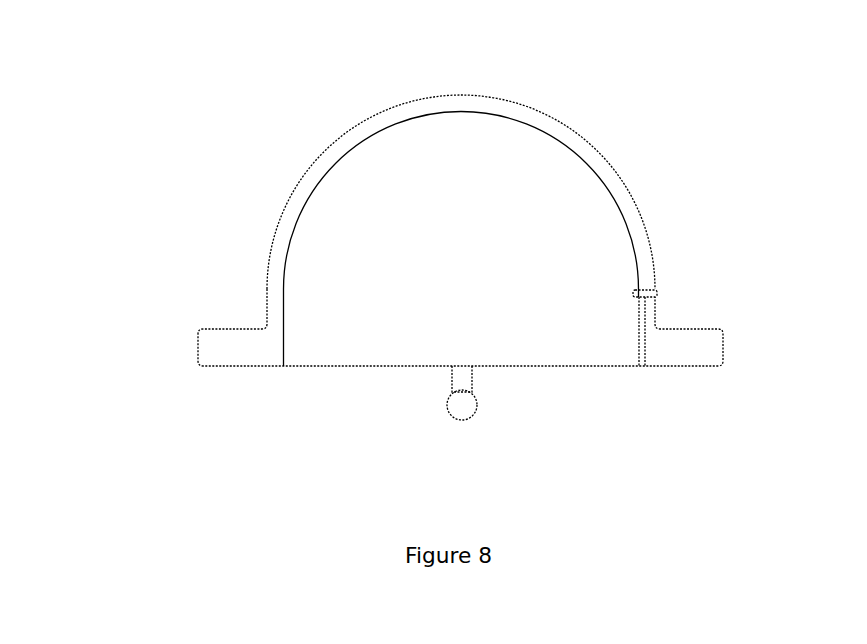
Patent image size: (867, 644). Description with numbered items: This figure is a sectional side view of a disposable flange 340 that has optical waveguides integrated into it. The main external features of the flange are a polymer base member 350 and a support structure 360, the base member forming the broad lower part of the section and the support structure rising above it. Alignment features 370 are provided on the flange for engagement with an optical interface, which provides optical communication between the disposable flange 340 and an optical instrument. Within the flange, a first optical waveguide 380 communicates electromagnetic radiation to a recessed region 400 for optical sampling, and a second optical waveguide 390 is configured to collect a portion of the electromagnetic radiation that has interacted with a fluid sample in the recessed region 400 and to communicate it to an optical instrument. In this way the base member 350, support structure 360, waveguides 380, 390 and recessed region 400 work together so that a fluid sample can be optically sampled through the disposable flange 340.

The disposable flange 340 is at (186, 110).
The polymer base member 350 is at (198, 350).
The support structure 360 is at (423, 98).
The alignment features 370 is at (453, 416).
The first optical waveguide 380 is at (283, 272).
The second optical waveguide 390 is at (642, 347).
The recessed region 400 is at (657, 292).